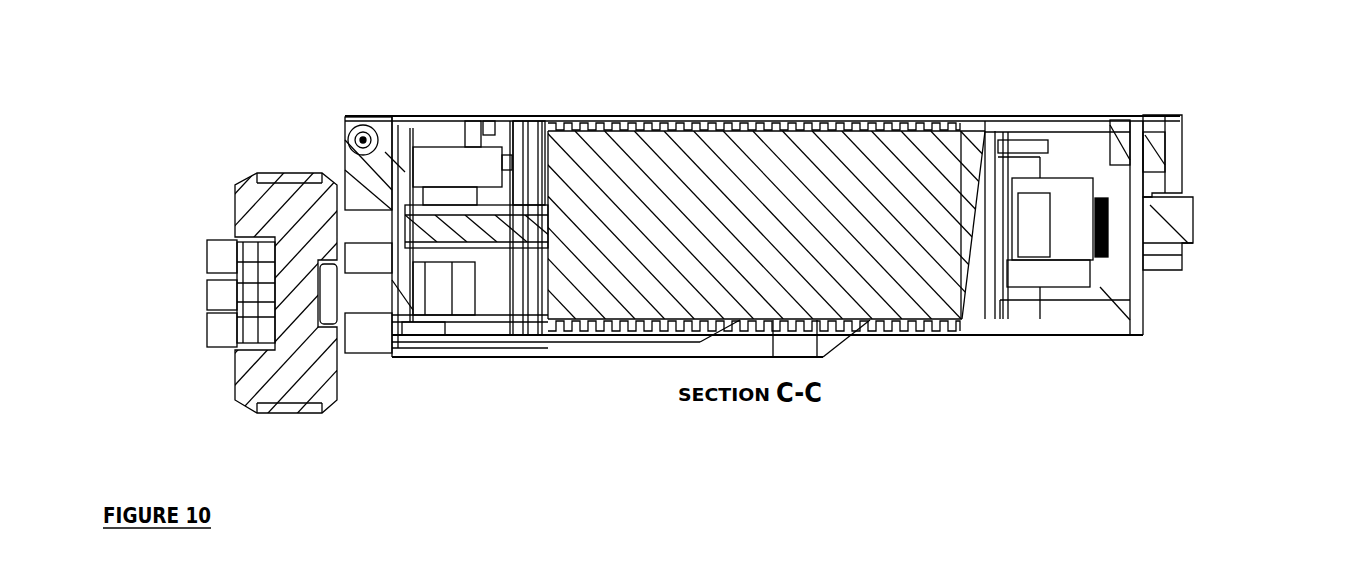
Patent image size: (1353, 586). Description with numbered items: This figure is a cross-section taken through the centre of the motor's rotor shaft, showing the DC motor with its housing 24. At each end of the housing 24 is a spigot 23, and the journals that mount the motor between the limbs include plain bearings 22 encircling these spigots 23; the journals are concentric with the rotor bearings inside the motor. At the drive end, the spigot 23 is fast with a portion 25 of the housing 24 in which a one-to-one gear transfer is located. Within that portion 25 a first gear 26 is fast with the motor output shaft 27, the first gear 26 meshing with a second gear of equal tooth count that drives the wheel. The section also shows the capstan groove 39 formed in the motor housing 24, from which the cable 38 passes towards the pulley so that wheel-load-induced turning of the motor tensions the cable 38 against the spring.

The plain bearing 22 is at (407, 212).
The spigot 23 is at (237, 393).
The housing 24 is at (988, 116).
The portion of the housing 25 is at (513, 116).
The first gear 26 is at (457, 197).
The motor output shaft 27 is at (473, 225).
The cable 38 is at (488, 118).
The capstan groove 39 is at (473, 116).